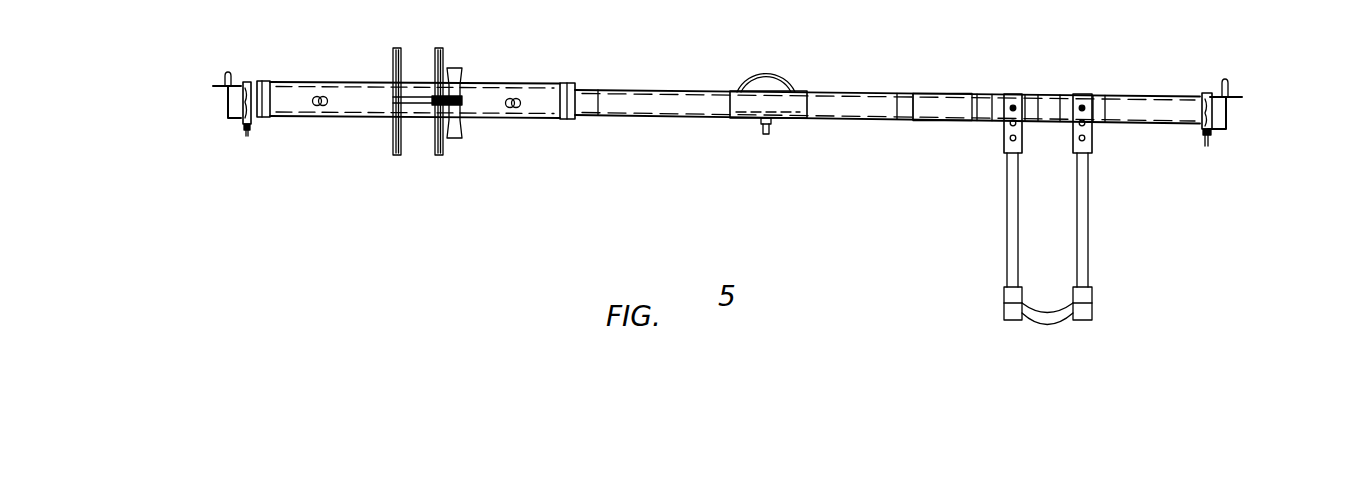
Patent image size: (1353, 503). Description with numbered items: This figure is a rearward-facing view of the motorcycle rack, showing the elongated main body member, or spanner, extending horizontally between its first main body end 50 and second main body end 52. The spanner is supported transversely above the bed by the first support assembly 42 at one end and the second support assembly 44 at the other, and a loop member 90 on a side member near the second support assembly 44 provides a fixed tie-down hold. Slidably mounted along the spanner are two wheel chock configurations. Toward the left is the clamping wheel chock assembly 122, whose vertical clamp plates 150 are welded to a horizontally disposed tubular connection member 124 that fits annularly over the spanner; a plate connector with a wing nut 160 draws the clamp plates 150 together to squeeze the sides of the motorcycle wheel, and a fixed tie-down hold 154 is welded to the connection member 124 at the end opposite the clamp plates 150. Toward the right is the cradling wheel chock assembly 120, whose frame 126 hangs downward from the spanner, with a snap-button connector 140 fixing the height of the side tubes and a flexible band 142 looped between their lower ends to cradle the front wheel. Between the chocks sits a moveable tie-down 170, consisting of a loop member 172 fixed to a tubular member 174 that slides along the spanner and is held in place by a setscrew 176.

The first support assembly 42 is at (207, 133).
The second support assembly 44 is at (1237, 153).
The first main body end 50 is at (291, 72).
The second main body end 52 is at (1194, 84).
The loop member 90 is at (1229, 83).
The cradling wheel chock assembly 120 is at (1106, 279).
The clamping wheel chock assembly 122 is at (424, 163).
The tubular connection member 124 is at (546, 97).
The frame 126 is at (996, 198).
The snap-button connector 140 is at (849, 101).
The flexible band 142 is at (1045, 322).
The clamp plate 150 is at (393, 58).
The fixed tie-down hold 154 is at (260, 128).
The wing nut 160 is at (453, 73).
The moveable tie-down 170 is at (782, 104).
The loop member 172 is at (758, 75).
The tubular member 174 is at (746, 110).
The setscrew 176 is at (772, 136).